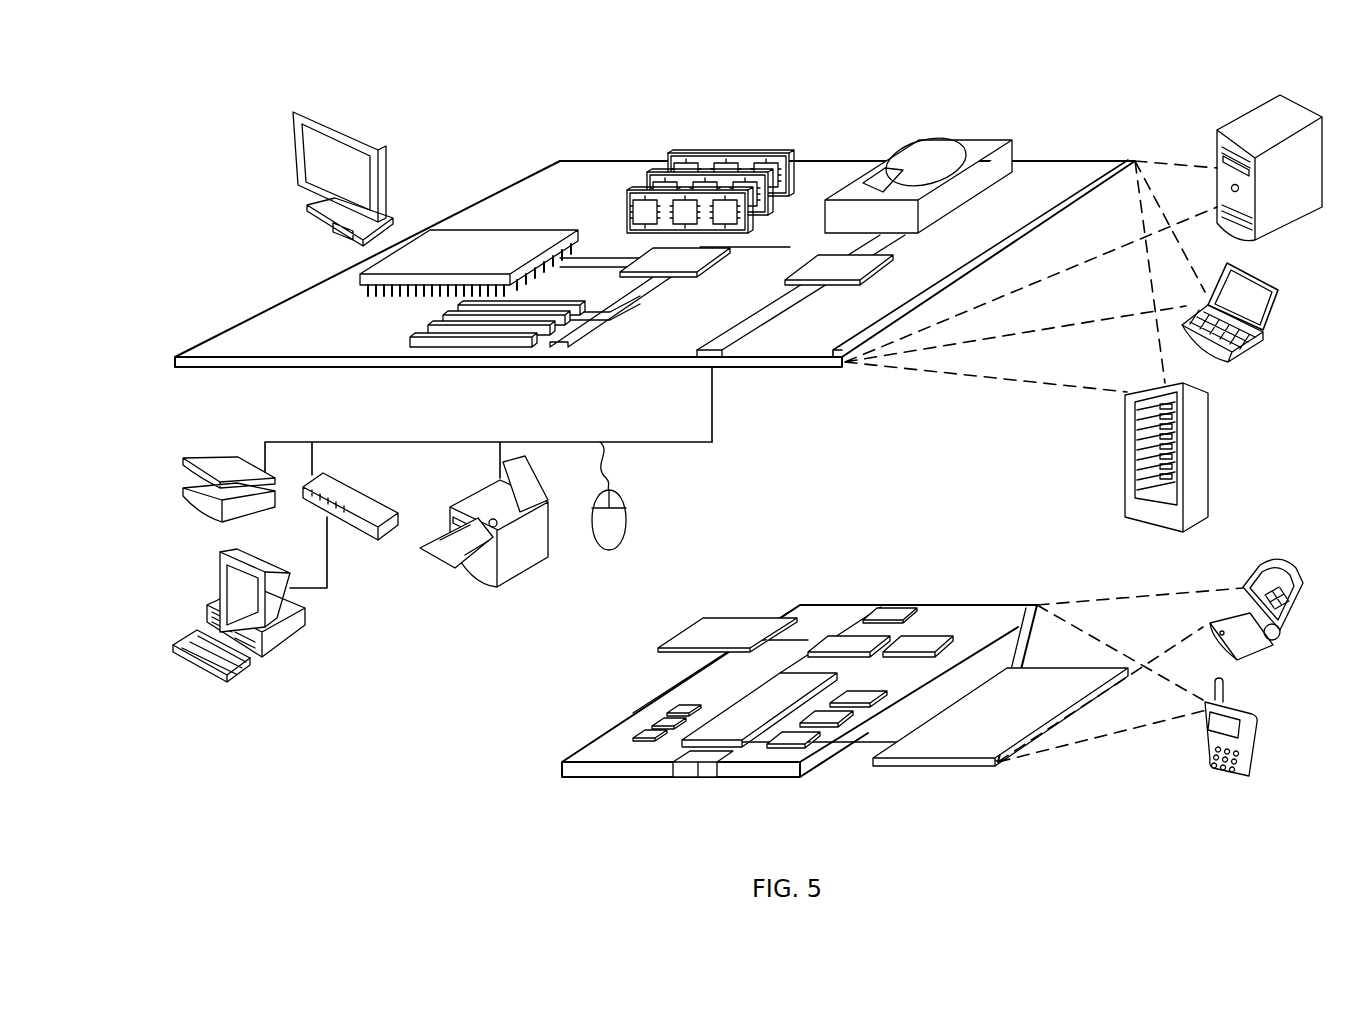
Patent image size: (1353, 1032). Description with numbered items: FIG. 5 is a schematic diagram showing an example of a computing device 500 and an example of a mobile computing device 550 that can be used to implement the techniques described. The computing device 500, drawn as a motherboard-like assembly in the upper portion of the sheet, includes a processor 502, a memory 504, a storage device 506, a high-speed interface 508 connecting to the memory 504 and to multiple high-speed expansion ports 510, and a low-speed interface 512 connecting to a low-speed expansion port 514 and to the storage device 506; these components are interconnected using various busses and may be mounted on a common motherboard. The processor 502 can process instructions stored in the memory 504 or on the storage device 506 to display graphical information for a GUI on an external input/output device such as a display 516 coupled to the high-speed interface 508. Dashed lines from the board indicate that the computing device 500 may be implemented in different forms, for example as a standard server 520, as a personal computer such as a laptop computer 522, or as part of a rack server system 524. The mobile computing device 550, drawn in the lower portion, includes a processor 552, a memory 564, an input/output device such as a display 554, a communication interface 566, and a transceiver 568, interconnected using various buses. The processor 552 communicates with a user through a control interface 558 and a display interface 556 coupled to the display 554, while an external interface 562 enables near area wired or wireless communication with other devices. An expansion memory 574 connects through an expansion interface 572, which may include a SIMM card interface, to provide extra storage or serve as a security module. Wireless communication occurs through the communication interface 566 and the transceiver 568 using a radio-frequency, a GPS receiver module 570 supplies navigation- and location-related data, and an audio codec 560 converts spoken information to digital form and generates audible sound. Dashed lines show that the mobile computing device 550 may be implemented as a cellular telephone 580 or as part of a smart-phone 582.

The computing device 500 is at (487, 137).
The processor 502 is at (365, 277).
The memory 504 is at (680, 160).
The storage device 506 is at (906, 146).
The high-speed interface 508 is at (648, 262).
The high-speed expansion ports 510 is at (425, 332).
The low-speed interface 512 is at (822, 264).
The low-speed expansion port 514 is at (730, 362).
The display 516 is at (302, 113).
The standard server 520 is at (1210, 147).
The laptop computer 522 is at (1278, 289).
The rack server system 524 is at (1123, 480).
The mobile computing device 550 is at (545, 767).
The processor 552 is at (735, 735).
The display 554 is at (965, 750).
The display interface 556 is at (800, 748).
The control interface 558 is at (825, 724).
The audio codec 560 is at (848, 702).
The external interface 562 is at (697, 770).
The memory 564 is at (650, 724).
The communication interface 566 is at (850, 642).
The transceiver 568 is at (921, 642).
The GPS receiver module 570 is at (905, 612).
The expansion interface 572 is at (780, 619).
The expansion memory 574 is at (712, 622).
The cellular telephone 580 is at (1262, 568).
The smart-phone 582 is at (1208, 735).